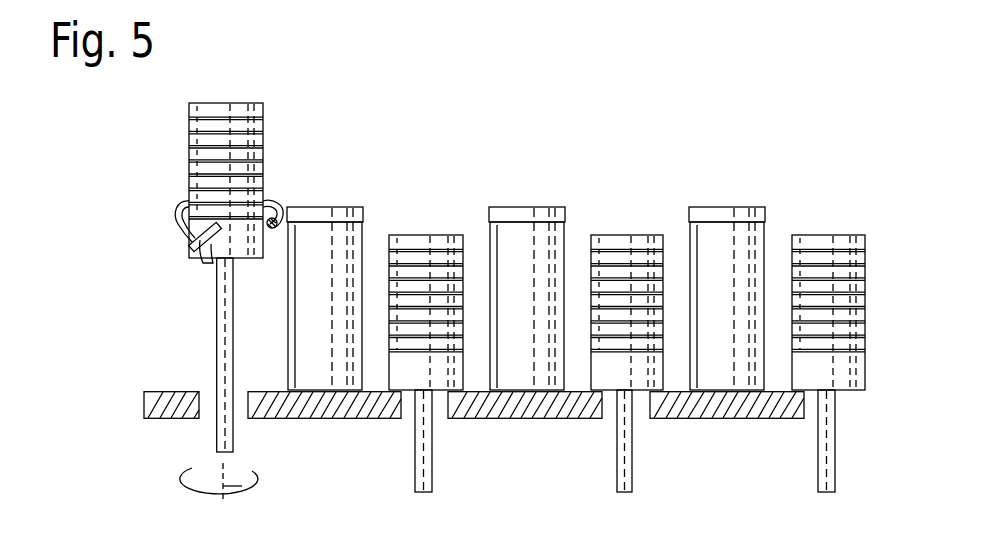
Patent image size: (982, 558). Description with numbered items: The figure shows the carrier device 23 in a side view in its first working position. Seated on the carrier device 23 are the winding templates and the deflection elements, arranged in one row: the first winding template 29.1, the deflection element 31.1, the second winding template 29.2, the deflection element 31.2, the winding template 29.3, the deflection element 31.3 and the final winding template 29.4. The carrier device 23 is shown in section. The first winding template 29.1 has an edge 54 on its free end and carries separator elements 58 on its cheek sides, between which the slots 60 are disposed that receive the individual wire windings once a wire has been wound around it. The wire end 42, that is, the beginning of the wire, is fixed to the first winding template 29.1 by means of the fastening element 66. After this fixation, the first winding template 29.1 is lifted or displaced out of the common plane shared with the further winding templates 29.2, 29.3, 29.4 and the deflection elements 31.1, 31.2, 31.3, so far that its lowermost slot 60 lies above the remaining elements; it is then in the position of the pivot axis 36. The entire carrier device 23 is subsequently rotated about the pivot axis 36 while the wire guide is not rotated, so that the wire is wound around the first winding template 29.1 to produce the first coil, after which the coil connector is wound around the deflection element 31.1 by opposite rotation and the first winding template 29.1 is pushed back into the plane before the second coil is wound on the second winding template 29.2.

The carrier device 23 is at (522, 403).
The first winding template 29.1 is at (226, 82).
The second winding template 29.2 is at (427, 217).
The winding template 29.3 is at (629, 217).
The final winding template 29.4 is at (830, 217).
The deflection element 31.1 is at (325, 192).
The deflection element 31.2 is at (528, 192).
The deflection element 31.3 is at (728, 192).
The pivot axis 36 is at (262, 488).
The wire end 42 is at (200, 262).
The edge 54 is at (203, 109).
The separator element 58 is at (207, 167).
The slot 60 is at (212, 208).
The fastening element 66 is at (192, 240).